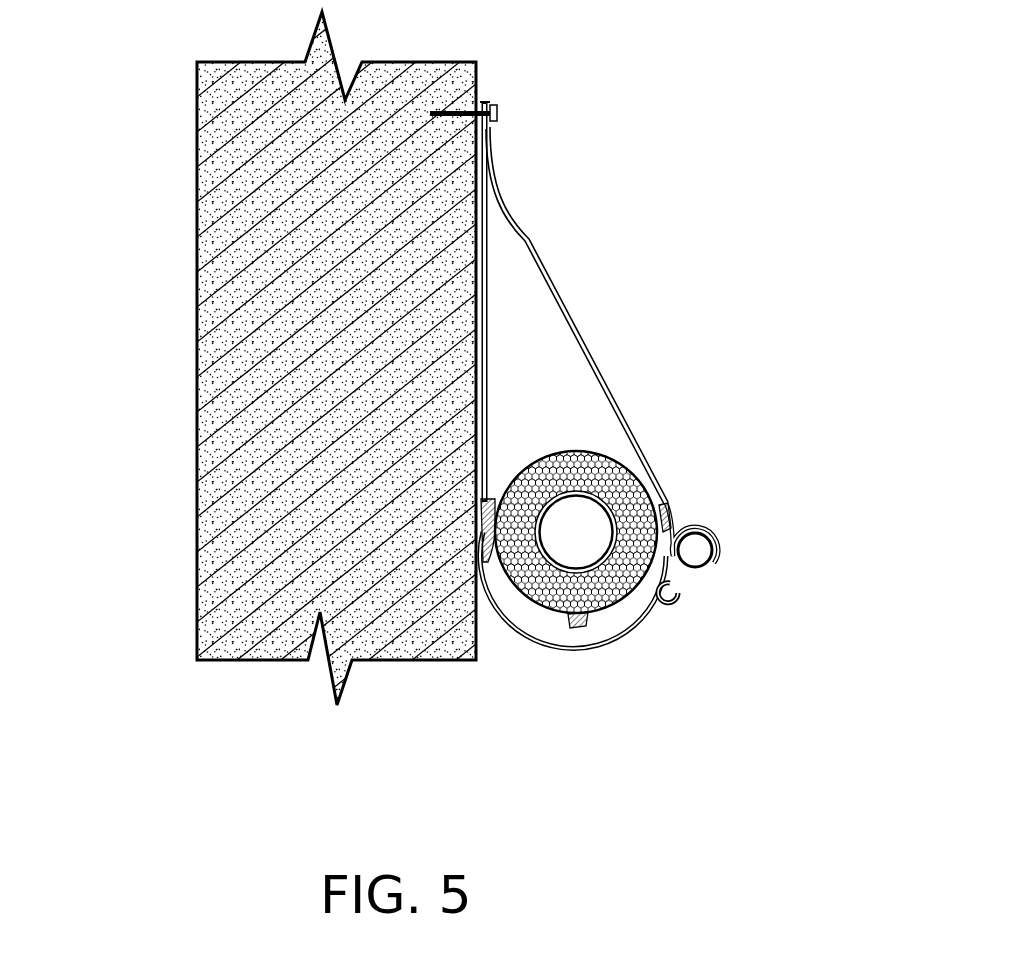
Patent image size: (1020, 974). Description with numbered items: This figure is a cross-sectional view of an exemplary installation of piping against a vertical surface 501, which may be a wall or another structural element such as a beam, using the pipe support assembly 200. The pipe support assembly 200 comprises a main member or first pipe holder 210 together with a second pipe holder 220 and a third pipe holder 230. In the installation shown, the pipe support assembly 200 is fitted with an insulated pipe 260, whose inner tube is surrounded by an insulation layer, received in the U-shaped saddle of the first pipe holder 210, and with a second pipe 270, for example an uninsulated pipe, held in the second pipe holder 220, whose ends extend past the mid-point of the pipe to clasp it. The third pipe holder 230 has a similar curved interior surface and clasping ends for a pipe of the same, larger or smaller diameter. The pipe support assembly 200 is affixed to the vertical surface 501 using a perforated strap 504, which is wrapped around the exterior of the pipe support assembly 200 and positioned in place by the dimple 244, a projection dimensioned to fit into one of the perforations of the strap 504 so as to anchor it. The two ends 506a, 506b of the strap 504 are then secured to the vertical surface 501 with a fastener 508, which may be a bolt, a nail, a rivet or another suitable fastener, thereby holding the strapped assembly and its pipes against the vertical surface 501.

The vertical surface 501 is at (197, 277).
The fastener 508 is at (494, 110).
The end of the strap 506a is at (510, 207).
The end of the strap 506b is at (493, 160).
The perforated strap 504 is at (527, 233).
The pipe support assembly 200 is at (693, 472).
The insulated pipe 260 is at (582, 448).
The first pipe holder 210 is at (498, 488).
The second pipe holder 220 is at (710, 512).
The second pipe 270 is at (712, 552).
The dimple 244 is at (572, 627).
The third pipe holder 230 is at (670, 623).